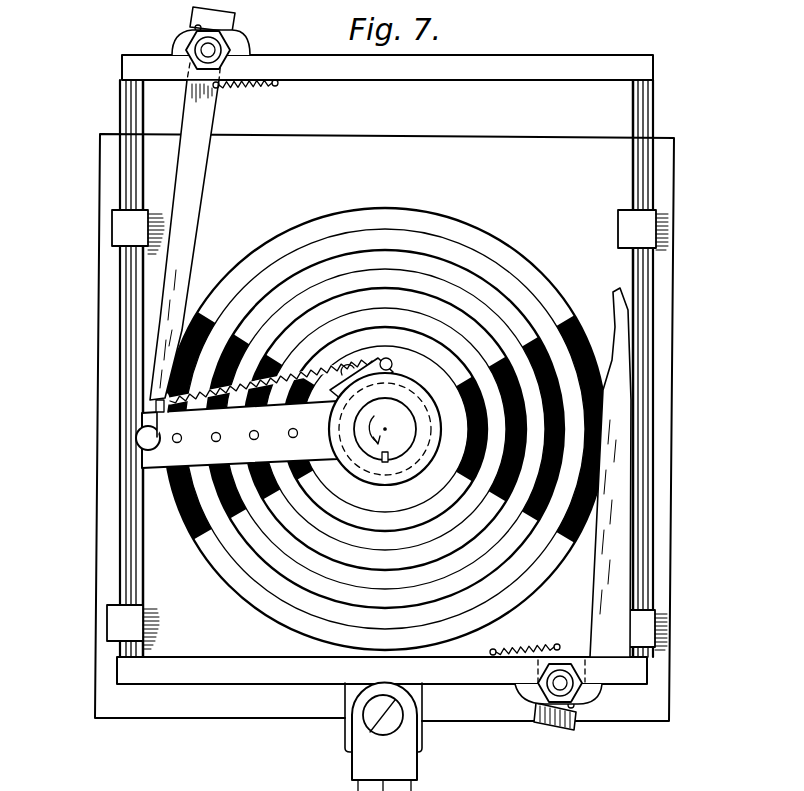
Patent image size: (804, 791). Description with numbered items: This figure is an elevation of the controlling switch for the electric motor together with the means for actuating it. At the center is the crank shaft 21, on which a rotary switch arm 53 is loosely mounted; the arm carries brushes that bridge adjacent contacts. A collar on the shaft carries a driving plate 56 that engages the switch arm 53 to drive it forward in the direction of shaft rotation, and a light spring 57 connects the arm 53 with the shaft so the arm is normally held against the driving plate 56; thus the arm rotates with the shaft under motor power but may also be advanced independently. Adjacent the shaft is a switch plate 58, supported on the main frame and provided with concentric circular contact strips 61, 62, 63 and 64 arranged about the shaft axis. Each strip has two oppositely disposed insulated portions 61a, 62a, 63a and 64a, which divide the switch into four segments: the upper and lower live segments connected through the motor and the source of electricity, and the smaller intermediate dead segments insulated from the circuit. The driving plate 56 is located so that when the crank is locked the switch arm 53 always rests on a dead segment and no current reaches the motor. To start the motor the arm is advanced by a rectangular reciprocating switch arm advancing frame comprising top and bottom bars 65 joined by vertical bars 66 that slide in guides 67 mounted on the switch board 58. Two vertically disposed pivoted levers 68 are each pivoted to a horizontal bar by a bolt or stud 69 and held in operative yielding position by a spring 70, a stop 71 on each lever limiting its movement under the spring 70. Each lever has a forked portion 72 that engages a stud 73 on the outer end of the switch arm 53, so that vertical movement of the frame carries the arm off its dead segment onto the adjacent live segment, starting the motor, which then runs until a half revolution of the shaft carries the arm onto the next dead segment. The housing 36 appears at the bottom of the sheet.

The crank shaft 21 is at (398, 440).
The housing 36 is at (426, 789).
The rotary switch arm 53 is at (213, 452).
The driving plate 56 is at (392, 367).
The light spring 57 is at (298, 362).
The switch plate 58 is at (458, 412).
The contact strip 61 is at (430, 348).
The contact strip 62 is at (457, 317).
The contact strip 63 is at (480, 285).
The contact strip 64 is at (492, 247).
The insulated portion 61a is at (472, 457).
The insulated portion 62a is at (505, 478).
The insulated portion 63a is at (572, 367).
The insulated portion 64a is at (560, 363).
The top and bottom bars 65 is at (645, 68).
The vertical bars 66 is at (120, 512).
The guides 67 is at (128, 223).
The pivoted levers 68 is at (192, 147).
The bolt or stud 69 is at (210, 50).
The spring 70 is at (252, 82).
The stop 71 is at (195, 27).
The forked portion 72 is at (152, 410).
The stud 73 is at (146, 438).